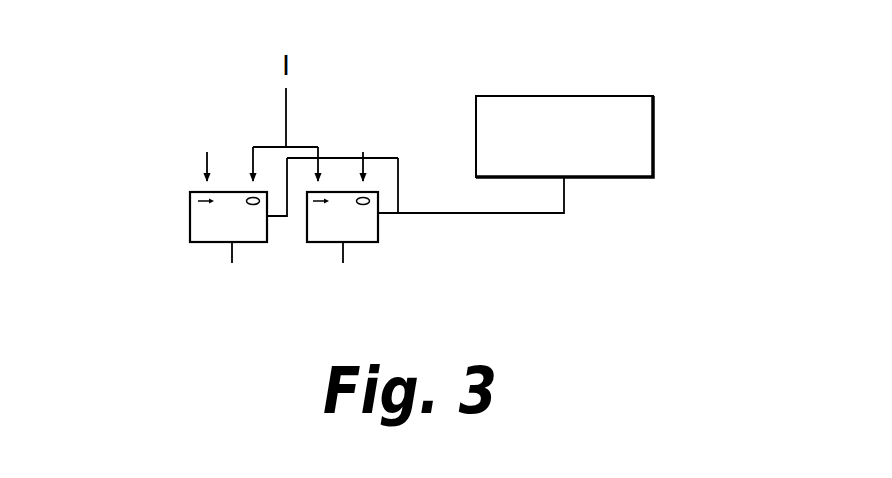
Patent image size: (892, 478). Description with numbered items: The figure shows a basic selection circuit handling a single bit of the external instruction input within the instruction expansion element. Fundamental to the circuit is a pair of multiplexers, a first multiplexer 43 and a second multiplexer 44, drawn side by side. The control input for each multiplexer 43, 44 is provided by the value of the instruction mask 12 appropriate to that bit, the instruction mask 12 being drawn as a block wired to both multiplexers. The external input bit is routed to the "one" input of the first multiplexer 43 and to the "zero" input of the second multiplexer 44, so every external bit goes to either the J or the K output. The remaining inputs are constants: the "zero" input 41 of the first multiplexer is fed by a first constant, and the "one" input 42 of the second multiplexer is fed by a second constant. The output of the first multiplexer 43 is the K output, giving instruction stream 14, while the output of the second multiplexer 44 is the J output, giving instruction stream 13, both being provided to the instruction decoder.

The instruction mask 12 is at (538, 154).
The instruction stream 13 is at (232, 285).
The instruction stream 14 is at (343, 285).
The "0" input to the first multiplexer 41 is at (382, 122).
The "1" input to the second multiplexer 42 is at (176, 121).
The first multiplexer 43 is at (381, 246).
The second multiplexer 44 is at (186, 247).